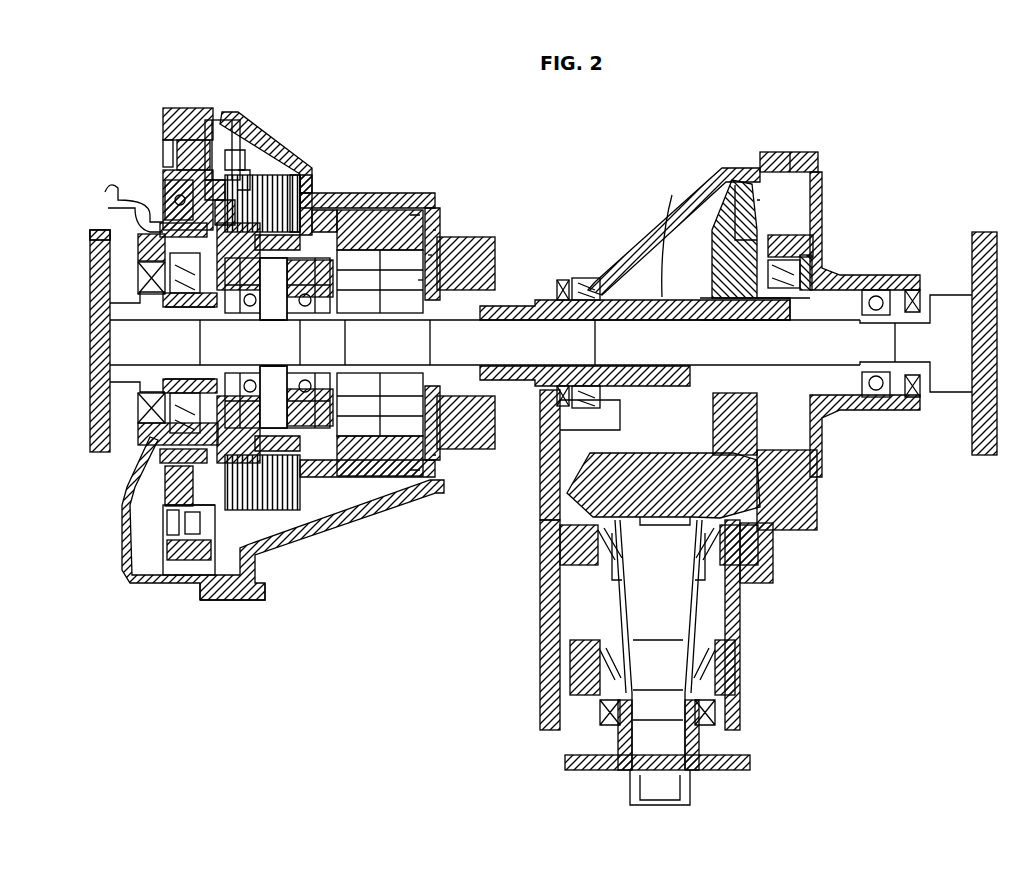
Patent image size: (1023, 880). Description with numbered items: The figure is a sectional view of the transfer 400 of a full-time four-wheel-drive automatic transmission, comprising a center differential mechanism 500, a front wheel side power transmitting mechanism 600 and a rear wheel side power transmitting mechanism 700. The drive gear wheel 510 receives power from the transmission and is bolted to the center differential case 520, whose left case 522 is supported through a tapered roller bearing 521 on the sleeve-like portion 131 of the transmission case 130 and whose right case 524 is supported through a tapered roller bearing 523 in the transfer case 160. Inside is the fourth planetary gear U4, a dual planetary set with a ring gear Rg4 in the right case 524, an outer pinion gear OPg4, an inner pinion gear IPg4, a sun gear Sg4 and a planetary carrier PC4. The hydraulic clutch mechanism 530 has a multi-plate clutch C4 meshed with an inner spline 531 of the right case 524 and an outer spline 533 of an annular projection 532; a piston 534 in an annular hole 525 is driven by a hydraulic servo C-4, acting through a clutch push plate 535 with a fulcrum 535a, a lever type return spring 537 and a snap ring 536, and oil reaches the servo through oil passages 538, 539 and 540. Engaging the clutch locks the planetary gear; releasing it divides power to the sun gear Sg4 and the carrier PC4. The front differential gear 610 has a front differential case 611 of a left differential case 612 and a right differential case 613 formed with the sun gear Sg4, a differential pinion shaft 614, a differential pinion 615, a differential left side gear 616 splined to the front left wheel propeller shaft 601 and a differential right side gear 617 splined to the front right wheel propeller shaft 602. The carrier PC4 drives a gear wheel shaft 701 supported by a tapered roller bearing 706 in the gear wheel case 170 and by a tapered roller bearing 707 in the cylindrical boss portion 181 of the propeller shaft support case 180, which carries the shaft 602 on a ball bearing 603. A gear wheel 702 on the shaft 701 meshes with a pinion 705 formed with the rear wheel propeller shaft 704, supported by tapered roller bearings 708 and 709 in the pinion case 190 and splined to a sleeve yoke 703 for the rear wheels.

The transmission case 130 is at (205, 598).
The sleeve-like portion 131 is at (150, 440).
The transfer case 160 is at (488, 262).
The gear wheel case 170 is at (632, 236).
The propeller shaft support case 180 is at (790, 215).
The cylindrical boss portion 181 is at (802, 240).
The pinion case 190 is at (740, 605).
The transfer 400 is at (826, 135).
The center differential mechanism 500 is at (158, 125).
The drive gear wheel 510 is at (172, 108).
The center differential case 520 is at (208, 122).
The tapered roller bearing 521 is at (138, 402).
The left case 522 is at (145, 432).
The tapered roller bearing 523 is at (487, 245).
The right case 524 is at (400, 197).
The annular hole 525 is at (163, 215).
The hydraulic clutch mechanism 530 is at (165, 530).
The inner spline 531 is at (205, 150).
The annular projection 532 is at (330, 215).
The outer spline 533 is at (312, 195).
The piston 534 is at (165, 185).
The clutch push plate 535 is at (272, 176).
The fulcrum 535a is at (242, 180).
The snap ring 536 is at (205, 185).
The lever type return spring 537 is at (222, 205).
The oil passage 538 is at (138, 272).
The oil passage 539 is at (138, 245).
The oil passage 540 is at (92, 202).
The front wheel side power transmitting mechanism 600 is at (82, 350).
The front left wheel propeller shaft 601 is at (125, 328).
The front right wheel propeller shaft 602 is at (835, 355).
The ball bearing 603 is at (862, 288).
The front differential gear 610 is at (150, 565).
The front differential case 611 is at (365, 250).
The left differential case 612 is at (250, 565).
The right differential case 613 is at (300, 510).
The differential pinion shaft 614 is at (275, 540).
The differential pinion 615 is at (320, 505).
The differential left side gear 616 is at (140, 305).
The differential right side gear 617 is at (345, 495).
The rear wheel side power transmitting mechanism 700 is at (760, 180).
The gear wheel shaft 701 is at (672, 197).
The gear wheel 702 is at (820, 170).
The sleeve yoke 703 is at (720, 755).
The rear wheel propeller shaft 704 is at (640, 590).
The pinion 705 is at (597, 470).
The tapered roller bearing 706 is at (587, 270).
The tapered roller bearing 707 is at (812, 270).
The tapered roller bearing 708 is at (765, 540).
The tapered roller bearing 709 is at (735, 662).
The multi-plate clutch C4 is at (295, 185).
The hydraulic servo C-4 is at (165, 470).
The ring gear Rg4 is at (420, 210).
The outer pinion gear OPg4 is at (436, 230).
The fourth planetary gear U4 is at (430, 255).
The sun gear Sg4 is at (420, 280).
The planetary carrier PC4 is at (400, 465).
The inner pinion gear IPg4 is at (385, 478).